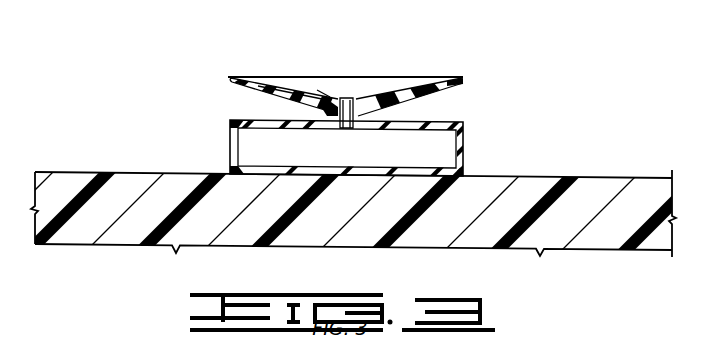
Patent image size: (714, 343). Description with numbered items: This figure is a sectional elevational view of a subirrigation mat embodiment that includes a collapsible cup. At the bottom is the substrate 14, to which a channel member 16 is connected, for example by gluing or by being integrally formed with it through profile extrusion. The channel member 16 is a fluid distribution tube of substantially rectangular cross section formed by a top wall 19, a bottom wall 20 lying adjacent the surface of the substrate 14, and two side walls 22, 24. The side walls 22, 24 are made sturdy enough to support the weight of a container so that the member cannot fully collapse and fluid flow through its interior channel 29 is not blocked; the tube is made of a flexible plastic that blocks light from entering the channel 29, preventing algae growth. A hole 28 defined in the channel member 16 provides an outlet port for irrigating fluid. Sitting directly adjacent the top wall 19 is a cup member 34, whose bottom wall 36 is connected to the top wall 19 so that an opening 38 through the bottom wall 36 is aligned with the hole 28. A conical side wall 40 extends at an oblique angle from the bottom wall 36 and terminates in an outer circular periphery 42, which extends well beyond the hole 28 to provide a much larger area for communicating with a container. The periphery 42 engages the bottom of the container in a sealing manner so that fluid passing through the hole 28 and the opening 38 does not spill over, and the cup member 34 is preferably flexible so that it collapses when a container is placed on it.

The substrate 14 is at (598, 180).
The channel member 16 is at (480, 138).
The top wall 19 is at (420, 122).
The bottom wall 20 is at (332, 165).
The side wall 22 is at (232, 144).
The side wall 24 is at (463, 133).
The hole 28 is at (348, 117).
The interior channel 29 is at (255, 154).
The cup member 34 is at (275, 72).
The bottom wall 36 is at (325, 116).
The opening 38 is at (347, 112).
The conical side wall 40 is at (372, 85).
The outer circular periphery 42 is at (452, 78).